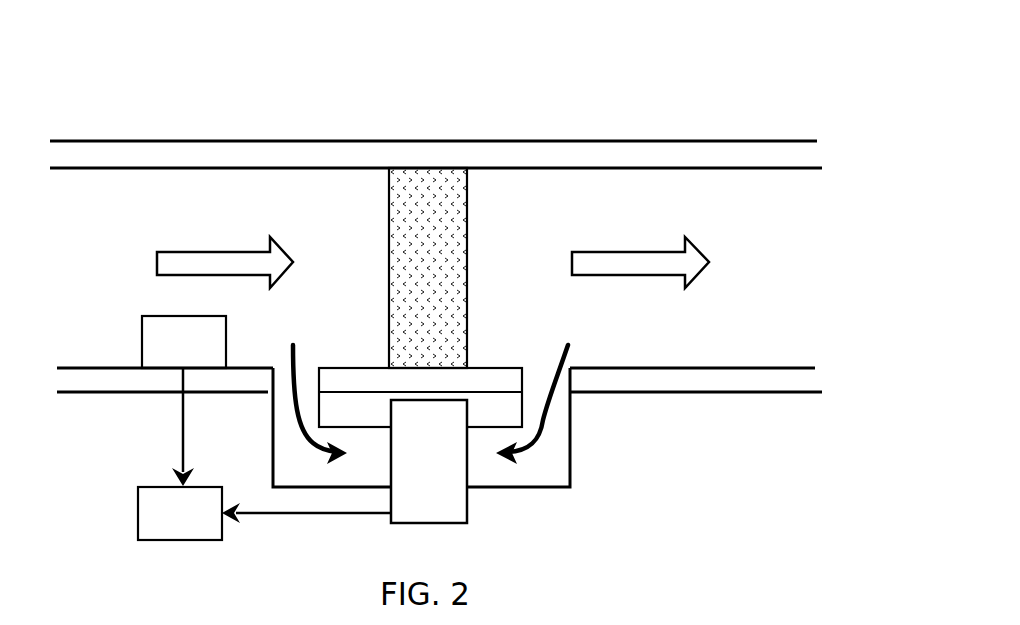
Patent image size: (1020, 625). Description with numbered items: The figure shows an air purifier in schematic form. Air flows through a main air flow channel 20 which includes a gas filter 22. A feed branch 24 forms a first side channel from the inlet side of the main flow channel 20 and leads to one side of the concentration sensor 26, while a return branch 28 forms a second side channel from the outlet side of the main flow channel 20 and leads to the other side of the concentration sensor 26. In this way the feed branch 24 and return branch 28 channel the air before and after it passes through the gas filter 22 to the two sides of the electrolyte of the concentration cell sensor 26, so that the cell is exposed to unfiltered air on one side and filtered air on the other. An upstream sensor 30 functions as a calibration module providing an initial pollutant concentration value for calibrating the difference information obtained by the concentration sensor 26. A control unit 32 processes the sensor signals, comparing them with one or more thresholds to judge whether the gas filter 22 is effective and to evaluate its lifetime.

The main air flow channel 20 is at (167, 203).
The gas filter 22 is at (465, 221).
The feed branch 24 is at (272, 457).
The concentration sensor 26 is at (467, 500).
The return branch 28 is at (572, 468).
The upstream sensor 30 is at (142, 342).
The control unit 32 is at (138, 500).